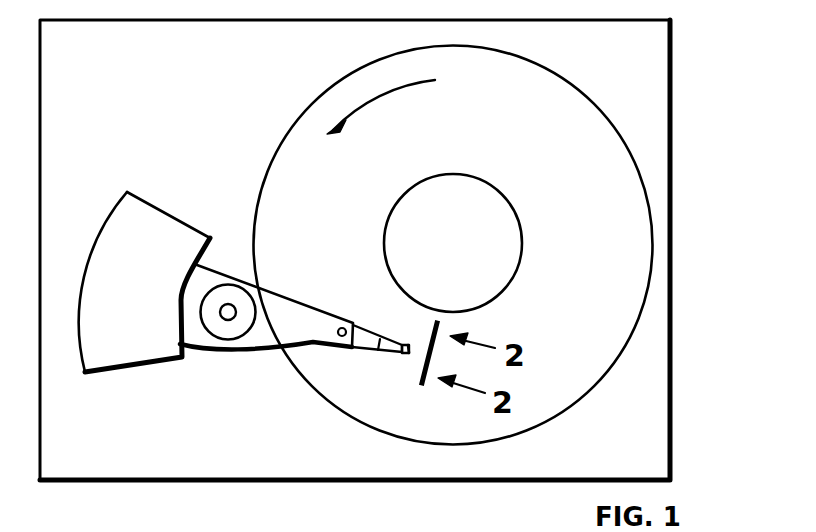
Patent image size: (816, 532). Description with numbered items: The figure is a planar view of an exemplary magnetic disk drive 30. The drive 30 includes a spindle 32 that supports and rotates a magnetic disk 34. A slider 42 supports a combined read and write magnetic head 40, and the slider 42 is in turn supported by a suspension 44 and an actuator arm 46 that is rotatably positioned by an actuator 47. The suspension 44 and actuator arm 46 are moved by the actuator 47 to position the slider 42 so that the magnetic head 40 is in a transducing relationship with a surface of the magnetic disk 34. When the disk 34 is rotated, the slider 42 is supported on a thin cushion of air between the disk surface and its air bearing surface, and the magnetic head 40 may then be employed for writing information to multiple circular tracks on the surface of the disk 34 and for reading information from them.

The magnetic disk drive 30 is at (683, 32).
The spindle 32 is at (477, 178).
The magnetic disk 34 is at (583, 244).
The combined read and write magnetic head 40 is at (406, 353).
The slider 42 is at (406, 346).
The suspension 44 is at (365, 348).
The actuator arm 46 is at (274, 290).
The actuator 47 is at (162, 209).